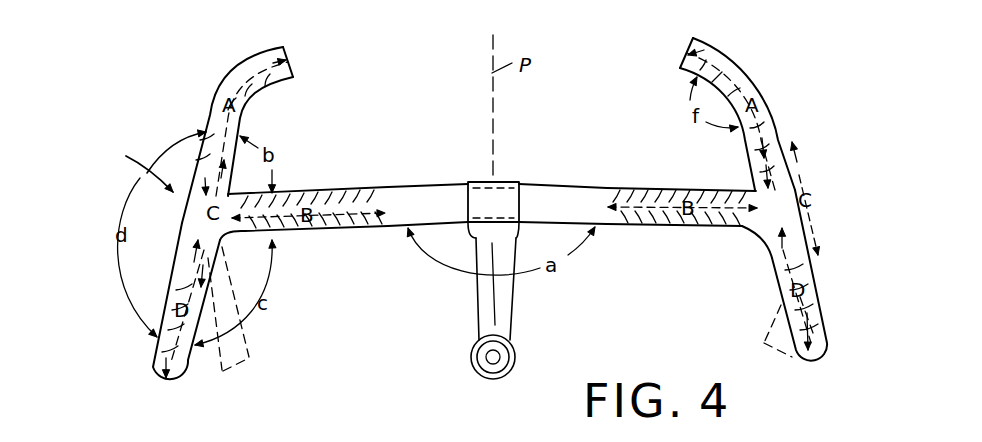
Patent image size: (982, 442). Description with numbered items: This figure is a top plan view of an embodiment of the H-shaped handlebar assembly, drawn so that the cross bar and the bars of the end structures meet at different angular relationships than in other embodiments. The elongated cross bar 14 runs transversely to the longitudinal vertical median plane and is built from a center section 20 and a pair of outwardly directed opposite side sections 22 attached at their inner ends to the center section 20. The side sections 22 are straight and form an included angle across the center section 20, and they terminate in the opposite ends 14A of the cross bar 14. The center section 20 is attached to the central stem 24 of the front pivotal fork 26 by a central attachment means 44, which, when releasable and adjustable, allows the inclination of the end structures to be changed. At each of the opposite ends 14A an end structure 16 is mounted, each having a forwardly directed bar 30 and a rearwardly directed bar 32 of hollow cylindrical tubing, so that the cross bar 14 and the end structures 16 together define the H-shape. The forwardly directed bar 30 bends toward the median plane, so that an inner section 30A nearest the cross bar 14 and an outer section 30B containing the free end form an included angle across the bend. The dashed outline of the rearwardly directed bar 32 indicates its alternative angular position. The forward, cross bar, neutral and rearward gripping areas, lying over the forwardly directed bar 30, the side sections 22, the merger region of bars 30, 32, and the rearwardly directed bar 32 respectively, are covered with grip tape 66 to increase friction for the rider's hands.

The cross bar 14 is at (574, 182).
The opposite ends of the cross bar 14A is at (750, 228).
The end structure 16 is at (847, 127).
The center section 20 is at (498, 181).
The outwardly directed opposite side sections 22 is at (329, 189).
The central stem 24 is at (513, 298).
The front pivotal fork 26 is at (516, 362).
The forwardly directed bar 30 is at (213, 100).
The inner section of the forwardly directed bar 30A is at (753, 158).
The outer section of the forwardly directed bar 30B is at (722, 52).
The rearwardly directed bar 32 is at (170, 289).
The central attachment means 44 is at (479, 181).
The grip tape 66 is at (251, 98).